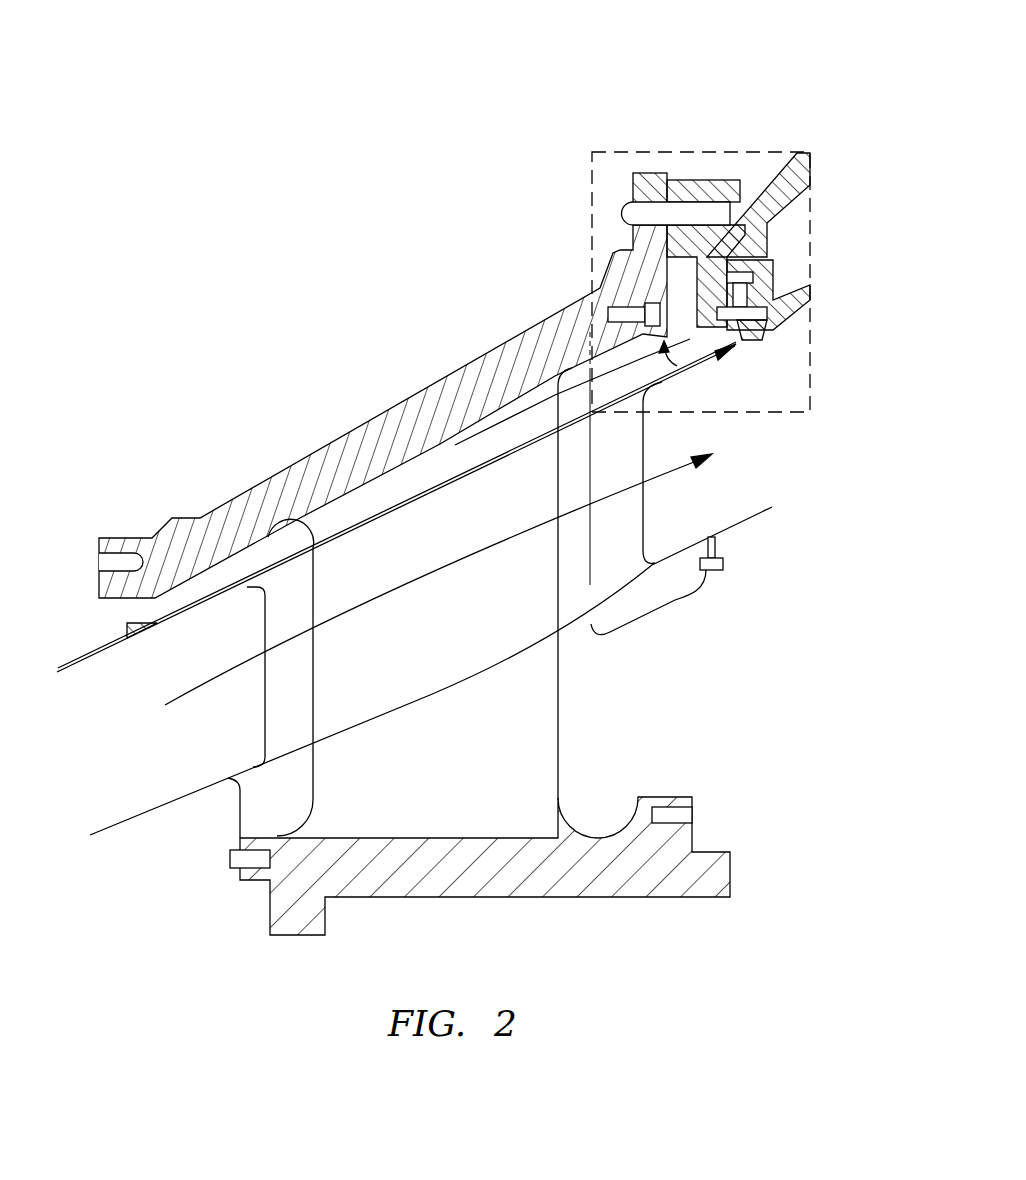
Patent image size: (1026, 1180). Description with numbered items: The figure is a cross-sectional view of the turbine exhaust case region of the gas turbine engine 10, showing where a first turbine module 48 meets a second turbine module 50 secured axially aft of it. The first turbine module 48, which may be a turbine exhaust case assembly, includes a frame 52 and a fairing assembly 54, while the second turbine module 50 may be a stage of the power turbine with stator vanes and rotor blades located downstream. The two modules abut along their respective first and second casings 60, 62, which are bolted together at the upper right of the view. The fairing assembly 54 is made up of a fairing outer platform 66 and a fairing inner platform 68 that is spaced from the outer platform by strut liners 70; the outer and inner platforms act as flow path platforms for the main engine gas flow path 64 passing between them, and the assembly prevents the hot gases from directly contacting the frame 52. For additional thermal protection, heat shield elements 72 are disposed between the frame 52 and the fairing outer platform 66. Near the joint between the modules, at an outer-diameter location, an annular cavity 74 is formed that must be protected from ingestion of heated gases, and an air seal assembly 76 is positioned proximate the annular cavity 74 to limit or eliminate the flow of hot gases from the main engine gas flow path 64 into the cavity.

The gas turbine engine 10 is at (263, 191).
The first turbine module 48 is at (428, 299).
The second turbine module 50 is at (805, 107).
The frame 52 is at (315, 384).
The fairing assembly 54 is at (486, 702).
The first casing 60 is at (517, 345).
The second casing 62 is at (783, 175).
The main engine gas flow path 64 is at (425, 576).
The fairing outer platform 66 is at (367, 517).
The fairing inner platform 68 is at (395, 713).
The strut liners 70 is at (265, 707).
The heat shield elements 72 is at (463, 440).
The annular cavity 74 is at (682, 307).
The air seal assembly 76 is at (678, 360).